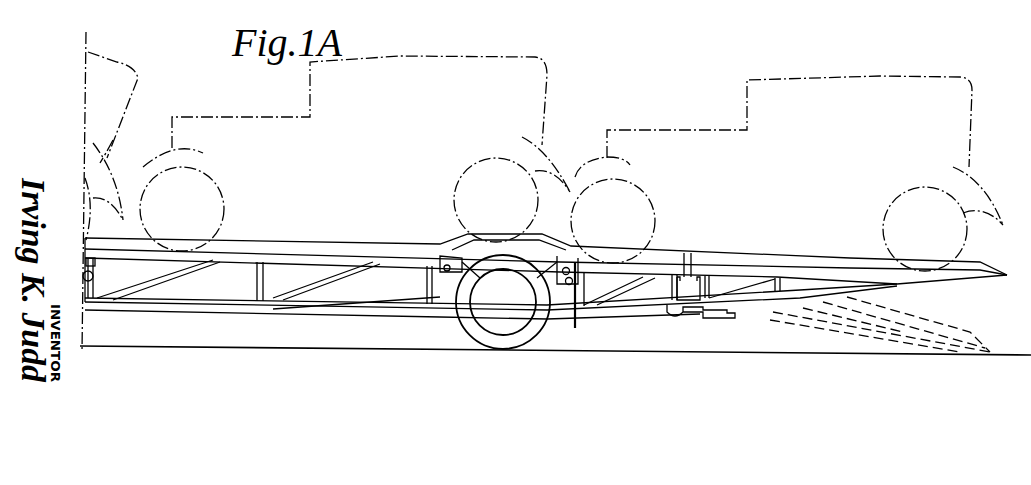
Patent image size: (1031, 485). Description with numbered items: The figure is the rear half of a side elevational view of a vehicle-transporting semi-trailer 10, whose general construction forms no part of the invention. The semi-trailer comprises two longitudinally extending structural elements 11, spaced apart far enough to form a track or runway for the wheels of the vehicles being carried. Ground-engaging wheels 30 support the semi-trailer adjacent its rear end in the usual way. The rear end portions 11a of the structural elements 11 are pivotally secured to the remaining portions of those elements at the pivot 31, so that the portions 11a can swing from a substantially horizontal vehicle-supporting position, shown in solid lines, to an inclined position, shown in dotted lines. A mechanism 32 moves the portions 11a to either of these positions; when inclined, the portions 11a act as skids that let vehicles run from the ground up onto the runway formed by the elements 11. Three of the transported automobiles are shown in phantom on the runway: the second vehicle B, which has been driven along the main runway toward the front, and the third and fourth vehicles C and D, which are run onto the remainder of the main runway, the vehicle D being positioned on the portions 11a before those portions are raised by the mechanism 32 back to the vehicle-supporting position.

The semi-trailer 10 is at (414, 240).
The longitudinally extending structural elements 11 is at (360, 252).
The rear end portions of the structural elements 11a is at (890, 270).
The ground-engaging wheels 30 is at (490, 313).
The pivot 31 is at (687, 256).
The mechanism 32 is at (693, 320).
The second vehicle B is at (121, 66).
The third vehicle C is at (413, 61).
The fourth vehicle D is at (870, 85).